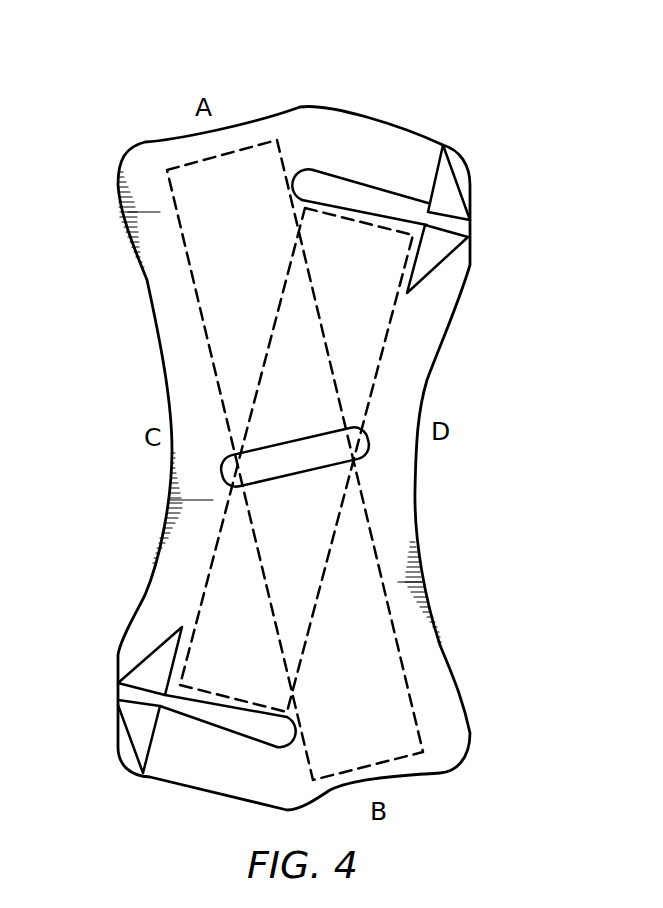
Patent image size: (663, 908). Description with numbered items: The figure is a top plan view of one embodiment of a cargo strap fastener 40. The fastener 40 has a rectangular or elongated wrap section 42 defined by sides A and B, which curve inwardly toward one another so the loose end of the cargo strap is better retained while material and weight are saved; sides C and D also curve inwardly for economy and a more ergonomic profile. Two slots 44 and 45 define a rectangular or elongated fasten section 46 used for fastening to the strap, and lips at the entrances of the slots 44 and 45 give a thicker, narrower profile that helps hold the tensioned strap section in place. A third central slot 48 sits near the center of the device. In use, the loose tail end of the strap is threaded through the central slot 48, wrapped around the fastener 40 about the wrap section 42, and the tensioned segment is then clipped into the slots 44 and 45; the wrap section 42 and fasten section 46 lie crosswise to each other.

The cargo strap fastener 40 is at (427, 78).
The elongated wrap section 42 is at (208, 348).
The slot 44 is at (473, 230).
The slot 45 is at (117, 692).
The elongated fasten section 46 is at (390, 331).
The central slot 48 is at (365, 452).